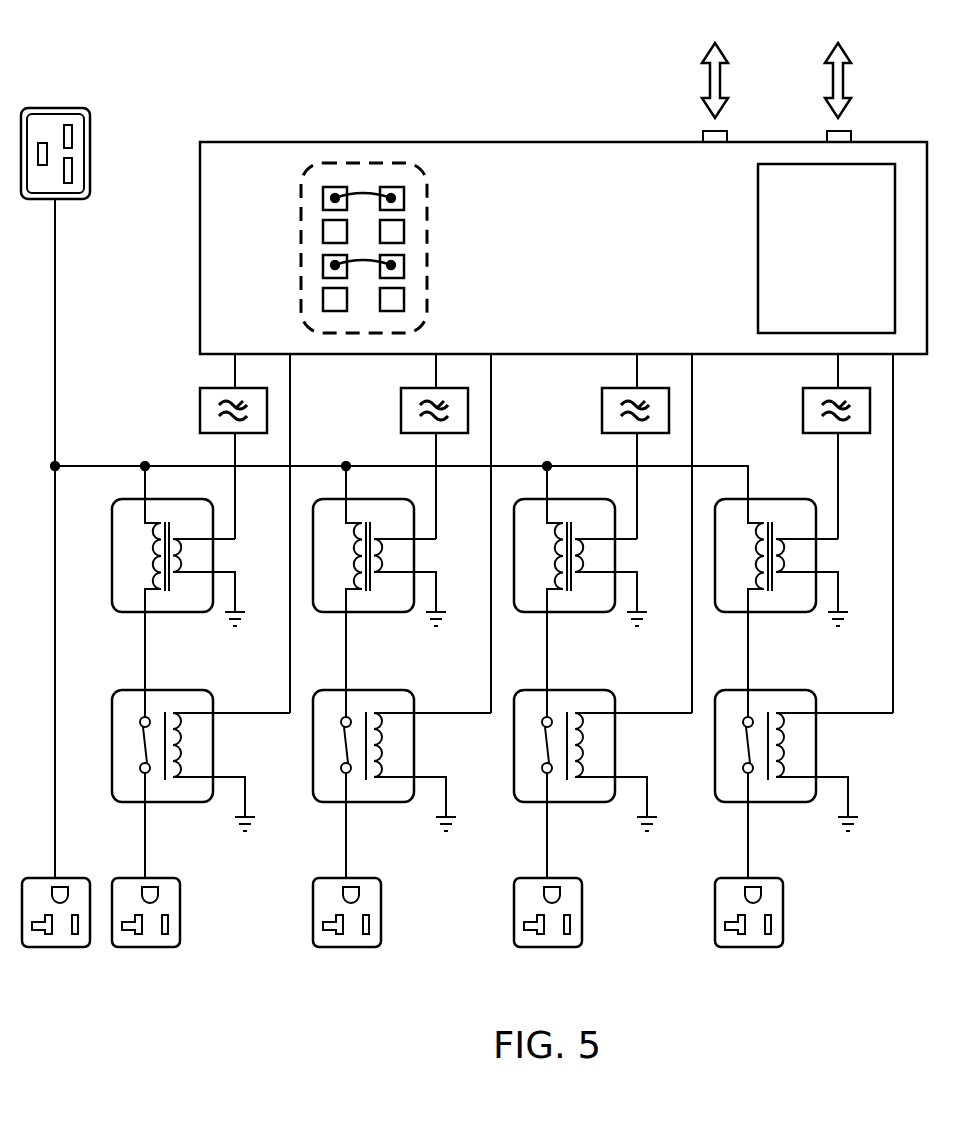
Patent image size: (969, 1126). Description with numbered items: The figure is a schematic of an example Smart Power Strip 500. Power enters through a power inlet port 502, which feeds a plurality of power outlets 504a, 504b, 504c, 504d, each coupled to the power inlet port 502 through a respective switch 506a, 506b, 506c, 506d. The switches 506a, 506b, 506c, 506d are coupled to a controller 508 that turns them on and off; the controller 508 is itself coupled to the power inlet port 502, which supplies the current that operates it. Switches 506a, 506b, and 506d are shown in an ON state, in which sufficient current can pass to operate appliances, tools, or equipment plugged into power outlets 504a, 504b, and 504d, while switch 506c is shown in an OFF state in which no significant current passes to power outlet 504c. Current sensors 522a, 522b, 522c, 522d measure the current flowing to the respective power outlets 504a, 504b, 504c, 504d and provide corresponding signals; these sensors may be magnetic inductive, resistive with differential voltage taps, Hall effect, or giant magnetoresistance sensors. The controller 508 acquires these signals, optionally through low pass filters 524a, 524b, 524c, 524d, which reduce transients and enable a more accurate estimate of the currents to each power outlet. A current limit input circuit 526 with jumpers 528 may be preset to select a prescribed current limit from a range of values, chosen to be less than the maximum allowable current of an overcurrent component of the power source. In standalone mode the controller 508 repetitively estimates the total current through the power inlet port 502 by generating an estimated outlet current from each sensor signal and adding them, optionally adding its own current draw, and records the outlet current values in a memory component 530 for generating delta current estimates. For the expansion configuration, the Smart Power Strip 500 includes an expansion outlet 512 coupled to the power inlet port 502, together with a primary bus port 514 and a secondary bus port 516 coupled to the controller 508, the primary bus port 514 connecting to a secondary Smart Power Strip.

The Smart Power Strip 500 is at (201, 63).
The power inlet port 502 is at (44, 108).
The power outlet 504a is at (133, 948).
The power outlet 504b is at (334, 948).
The power outlet 504c is at (559, 948).
The power outlet 504d is at (760, 948).
The switch 506a is at (182, 806).
The switch 506b is at (383, 806).
The switch 506c is at (584, 806).
The switch 506d is at (785, 806).
The controller 508 is at (543, 282).
The expansion outlet 512 is at (43, 948).
The primary bus port 514 is at (728, 138).
The secondary bus port 516 is at (851, 138).
The current sensor 522a is at (182, 616).
The current sensor 522b is at (383, 616).
The current sensor 522c is at (584, 616).
The current sensor 522d is at (785, 616).
The low pass filter 524a is at (200, 414).
The low pass filter 524b is at (401, 414).
The low pass filter 524c is at (602, 414).
The low pass filter 524d is at (803, 414).
The current limit input circuit 526 is at (300, 238).
The jumpers 528 is at (333, 198).
The memory component 530 is at (805, 282).